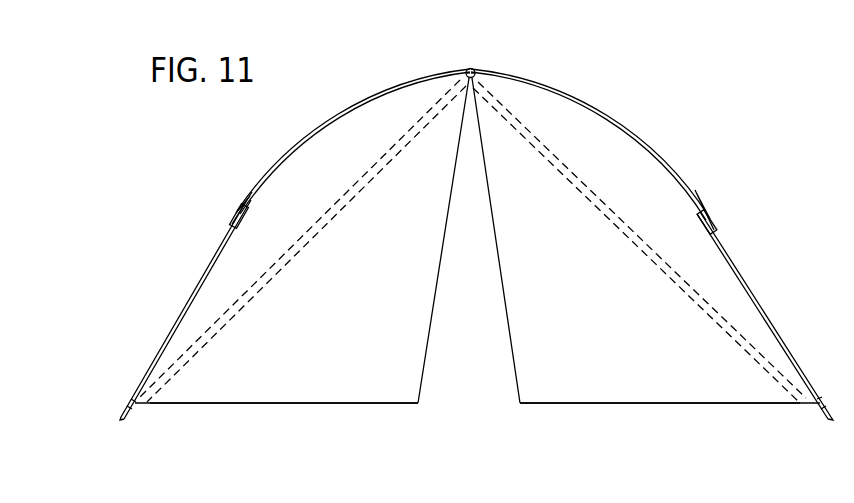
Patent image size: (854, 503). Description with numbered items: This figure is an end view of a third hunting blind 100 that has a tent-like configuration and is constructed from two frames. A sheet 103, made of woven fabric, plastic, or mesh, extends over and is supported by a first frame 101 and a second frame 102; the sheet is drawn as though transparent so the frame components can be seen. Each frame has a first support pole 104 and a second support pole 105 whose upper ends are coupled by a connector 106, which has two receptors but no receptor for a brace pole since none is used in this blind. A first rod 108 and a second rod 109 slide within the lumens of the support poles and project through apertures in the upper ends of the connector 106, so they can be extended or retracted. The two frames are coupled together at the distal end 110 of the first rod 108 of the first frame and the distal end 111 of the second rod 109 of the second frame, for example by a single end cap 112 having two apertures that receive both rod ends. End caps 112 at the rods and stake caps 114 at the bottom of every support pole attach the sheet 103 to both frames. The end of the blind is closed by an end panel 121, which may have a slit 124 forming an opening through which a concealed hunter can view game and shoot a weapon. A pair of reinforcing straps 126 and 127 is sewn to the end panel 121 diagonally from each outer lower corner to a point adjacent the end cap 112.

The third hunting blind 100 is at (266, 164).
The first frame 101 is at (207, 270).
The second frame 102 is at (746, 270).
The sheet 103 is at (348, 406).
The first support pole 104 is at (785, 342).
The second support pole 105 is at (168, 342).
The connector 106 is at (248, 224).
The first rod 108 is at (385, 95).
The second rod 109 is at (574, 98).
The distal end of first rod 110 is at (465, 72).
The distal end of second rod 111 is at (476, 71).
The end cap 112 is at (470, 68).
The stake cap 114 is at (134, 410).
The end panel 121 is at (590, 392).
The slit 124 is at (430, 340).
The reinforcing strap 126 is at (282, 284).
The reinforcing strap 127 is at (652, 256).